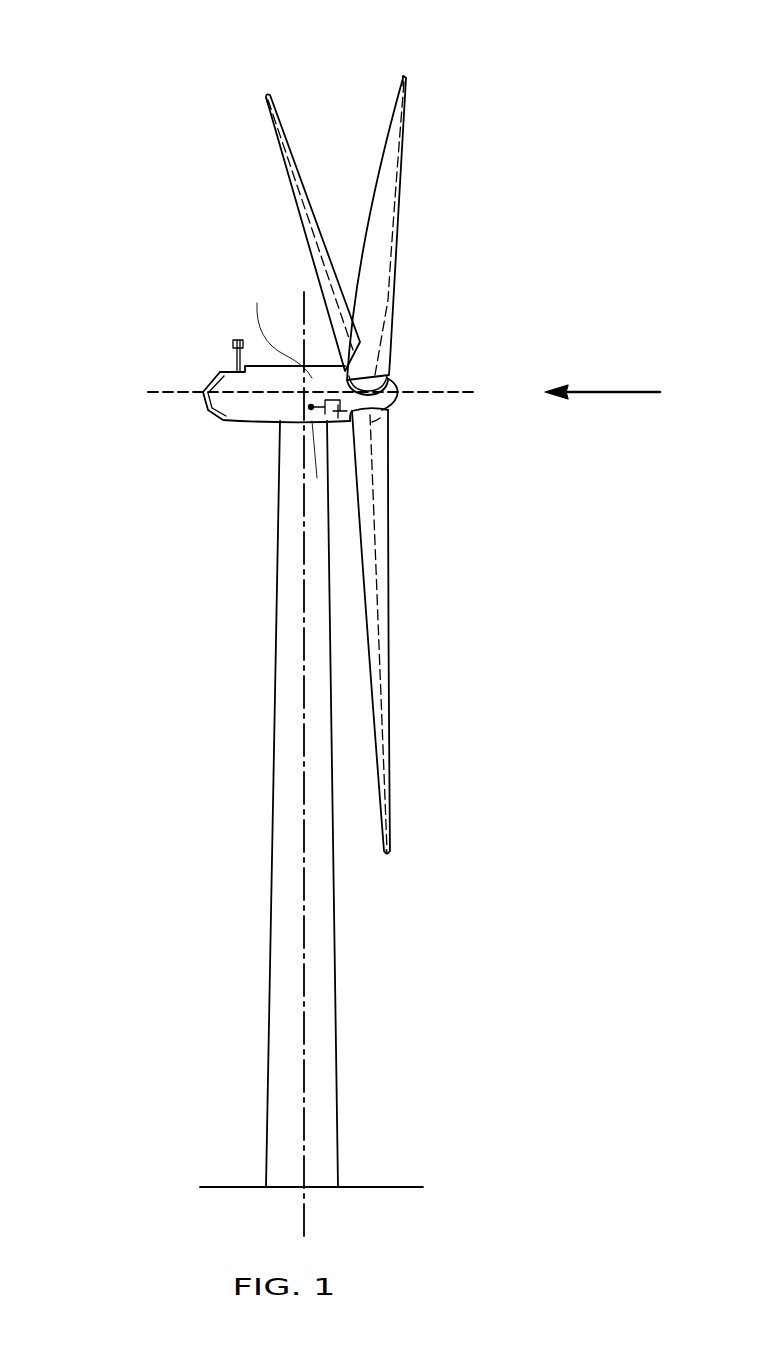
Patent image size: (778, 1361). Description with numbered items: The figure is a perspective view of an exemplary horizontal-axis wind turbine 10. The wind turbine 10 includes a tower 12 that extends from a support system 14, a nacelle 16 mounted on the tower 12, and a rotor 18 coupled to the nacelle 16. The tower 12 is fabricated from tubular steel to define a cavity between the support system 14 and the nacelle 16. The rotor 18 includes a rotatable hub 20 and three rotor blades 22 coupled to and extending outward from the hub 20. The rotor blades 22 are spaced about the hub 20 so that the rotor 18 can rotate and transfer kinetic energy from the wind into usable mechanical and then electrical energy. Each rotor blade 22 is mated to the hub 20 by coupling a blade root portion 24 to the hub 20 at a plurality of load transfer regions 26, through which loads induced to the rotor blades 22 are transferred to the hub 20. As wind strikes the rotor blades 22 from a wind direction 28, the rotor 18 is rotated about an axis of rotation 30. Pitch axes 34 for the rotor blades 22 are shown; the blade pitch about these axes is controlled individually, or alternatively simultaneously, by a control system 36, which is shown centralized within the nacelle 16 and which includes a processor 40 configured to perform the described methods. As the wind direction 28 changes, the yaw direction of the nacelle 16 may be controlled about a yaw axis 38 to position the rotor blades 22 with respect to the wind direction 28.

The wind turbine 10 is at (125, 52).
The tower 12 is at (268, 1062).
The support system 14 is at (235, 1187).
The nacelle 16 is at (243, 422).
The rotor 18 is at (343, 465).
The rotatable hub 20 is at (398, 388).
The rotor blade 22 is at (290, 168).
The blade root portion 24 is at (378, 537).
The load transfer region 26 is at (372, 422).
The wind direction 28 is at (612, 390).
The axis of rotation 30 is at (455, 394).
The pitch axis 34 is at (268, 128).
The control system 36 is at (318, 478).
The yaw axis 38 is at (305, 943).
The processor 40 is at (277, 327).